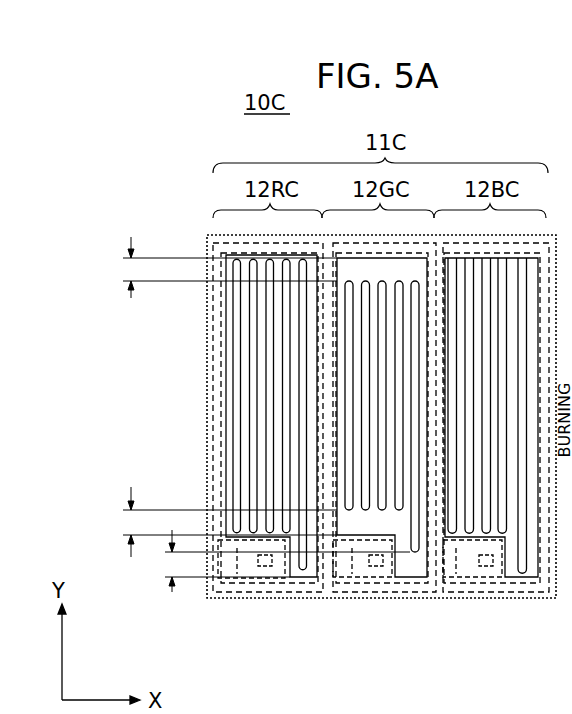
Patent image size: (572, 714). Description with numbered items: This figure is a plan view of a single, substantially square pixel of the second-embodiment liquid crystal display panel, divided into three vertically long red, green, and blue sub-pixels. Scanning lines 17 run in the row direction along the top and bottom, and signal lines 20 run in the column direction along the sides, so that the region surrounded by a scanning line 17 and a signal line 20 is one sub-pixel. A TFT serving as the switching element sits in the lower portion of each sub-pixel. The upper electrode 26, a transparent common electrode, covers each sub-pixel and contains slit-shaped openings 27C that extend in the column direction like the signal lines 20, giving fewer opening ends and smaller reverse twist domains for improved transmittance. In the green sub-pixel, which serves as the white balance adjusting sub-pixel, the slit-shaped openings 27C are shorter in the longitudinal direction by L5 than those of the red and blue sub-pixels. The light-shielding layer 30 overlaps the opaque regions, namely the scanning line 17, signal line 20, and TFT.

The scanning line 17 is at (227, 252).
The signal line 20 is at (219, 440).
The upper electrode 26 is at (232, 368).
The slit-shaped opening 27C is at (243, 383).
The light-shielding layer 30 is at (211, 472).
The thin film transistor TFT is at (236, 578).
The length difference L5 is at (254, 414).